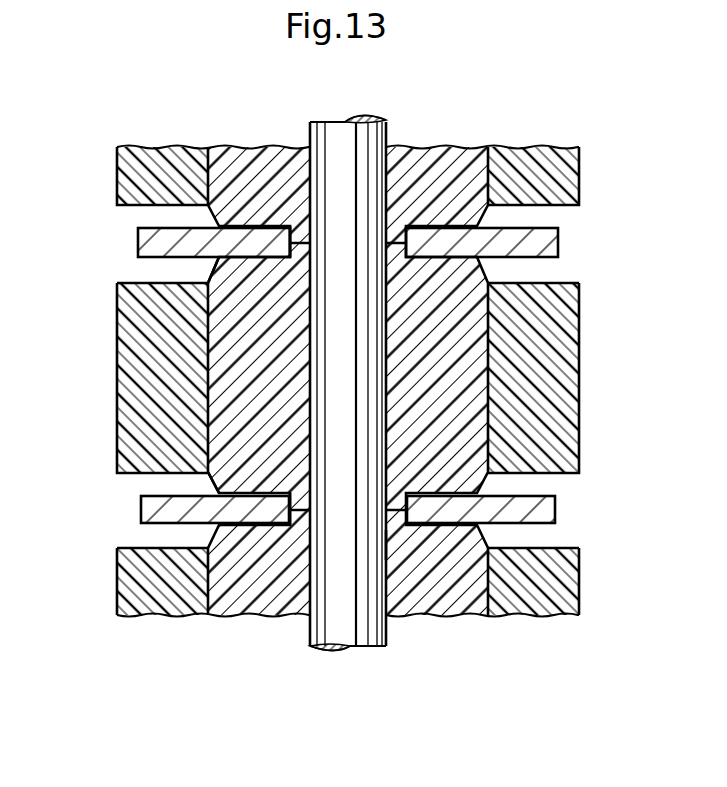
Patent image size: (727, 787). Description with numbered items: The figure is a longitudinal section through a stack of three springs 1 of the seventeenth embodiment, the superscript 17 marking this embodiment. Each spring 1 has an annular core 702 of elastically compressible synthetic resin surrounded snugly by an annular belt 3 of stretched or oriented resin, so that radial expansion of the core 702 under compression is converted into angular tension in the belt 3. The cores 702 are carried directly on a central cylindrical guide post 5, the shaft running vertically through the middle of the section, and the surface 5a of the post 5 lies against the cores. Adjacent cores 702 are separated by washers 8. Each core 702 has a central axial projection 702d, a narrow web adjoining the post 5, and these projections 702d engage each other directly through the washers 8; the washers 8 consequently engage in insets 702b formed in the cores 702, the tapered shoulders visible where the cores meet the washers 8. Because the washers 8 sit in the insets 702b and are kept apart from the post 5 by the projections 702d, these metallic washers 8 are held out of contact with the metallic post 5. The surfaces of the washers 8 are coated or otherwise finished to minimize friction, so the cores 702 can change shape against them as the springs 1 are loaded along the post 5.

The spring 1 is at (215, 140).
The seventeenth spring embodiment index 17 is at (427, 377).
The annular belt 3 is at (538, 156).
The guide post 5 is at (363, 628).
The shaft surface 5a is at (387, 548).
The washer 8 is at (145, 243).
The annular core 702 is at (430, 162).
The inset 702b is at (252, 262).
The central axial projection 702d is at (302, 256).